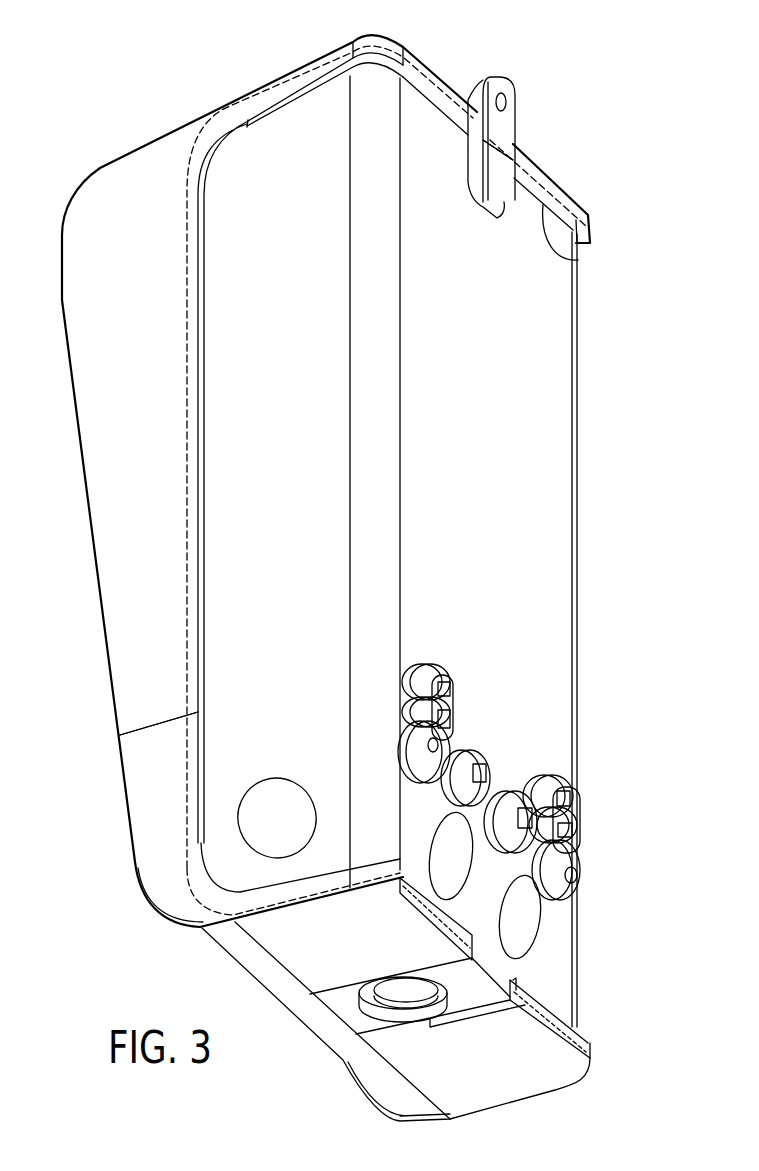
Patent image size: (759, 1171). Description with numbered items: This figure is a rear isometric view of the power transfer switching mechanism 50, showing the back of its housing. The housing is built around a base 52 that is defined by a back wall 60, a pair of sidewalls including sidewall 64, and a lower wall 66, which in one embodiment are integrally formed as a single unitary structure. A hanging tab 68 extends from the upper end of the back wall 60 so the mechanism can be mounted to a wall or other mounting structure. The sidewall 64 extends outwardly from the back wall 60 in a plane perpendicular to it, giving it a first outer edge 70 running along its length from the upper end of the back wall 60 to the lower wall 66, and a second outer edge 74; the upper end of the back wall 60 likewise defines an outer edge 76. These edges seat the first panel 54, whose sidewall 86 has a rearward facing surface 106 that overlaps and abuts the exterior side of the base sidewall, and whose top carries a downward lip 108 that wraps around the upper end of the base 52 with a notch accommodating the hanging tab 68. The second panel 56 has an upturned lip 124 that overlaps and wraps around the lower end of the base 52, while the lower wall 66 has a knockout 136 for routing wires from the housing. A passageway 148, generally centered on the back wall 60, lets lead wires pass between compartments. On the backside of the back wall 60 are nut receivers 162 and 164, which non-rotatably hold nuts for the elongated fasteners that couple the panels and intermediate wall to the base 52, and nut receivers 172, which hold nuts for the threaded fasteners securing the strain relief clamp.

The power transfer switching mechanism 50 is at (589, 61).
The base 52 is at (607, 406).
The first panel 54 is at (71, 191).
The second panel 56 is at (114, 859).
The back wall 60 is at (558, 628).
The sidewall 64 is at (225, 507).
The lower wall 66 is at (327, 888).
The hanging tab 68 is at (504, 133).
The first outer edge 70 is at (190, 617).
The second outer edge 74 is at (307, 77).
The outer edge 76 is at (442, 83).
The sidewall 86 is at (122, 652).
The rearward facing surface 106 is at (205, 658).
The lip 108 is at (578, 260).
The upturned lip 124 is at (579, 1047).
The knockout 136 is at (410, 997).
The passageway 148 is at (288, 806).
The nut receivers 162 is at (445, 720).
The nut receivers 164 is at (446, 687).
The nut receivers 172 is at (525, 805).